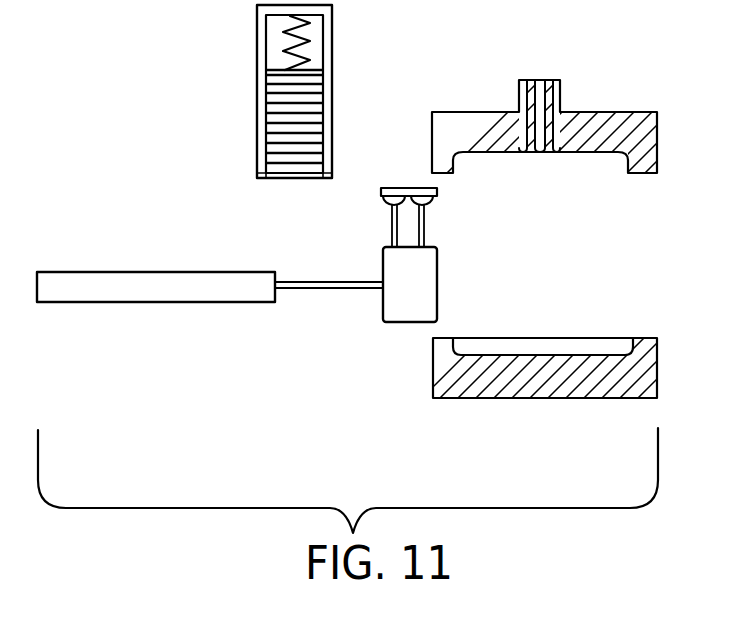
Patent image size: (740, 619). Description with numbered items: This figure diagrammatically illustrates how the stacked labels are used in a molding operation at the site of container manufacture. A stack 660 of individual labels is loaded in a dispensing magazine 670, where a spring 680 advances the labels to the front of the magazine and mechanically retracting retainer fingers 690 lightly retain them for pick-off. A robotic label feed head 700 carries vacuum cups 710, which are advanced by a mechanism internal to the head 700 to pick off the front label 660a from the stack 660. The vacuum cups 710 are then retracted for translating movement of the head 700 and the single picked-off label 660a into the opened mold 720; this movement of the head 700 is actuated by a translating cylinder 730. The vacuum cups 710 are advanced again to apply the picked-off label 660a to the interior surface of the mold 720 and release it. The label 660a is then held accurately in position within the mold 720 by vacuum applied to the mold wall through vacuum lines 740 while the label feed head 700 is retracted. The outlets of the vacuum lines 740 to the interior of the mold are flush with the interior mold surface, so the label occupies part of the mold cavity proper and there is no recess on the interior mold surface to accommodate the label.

The stack of labels 660 is at (297, 133).
The front label 660a is at (437, 191).
The dispensing magazine 670 is at (333, 41).
The spring 680 is at (290, 33).
The retainer fingers 690 is at (267, 178).
The robotic label feed head 700 is at (383, 265).
The vacuum cups 710 is at (424, 206).
The opened mold 720 is at (611, 189).
The translating cylinder 730 is at (147, 271).
The vacuum lines 740 is at (561, 97).